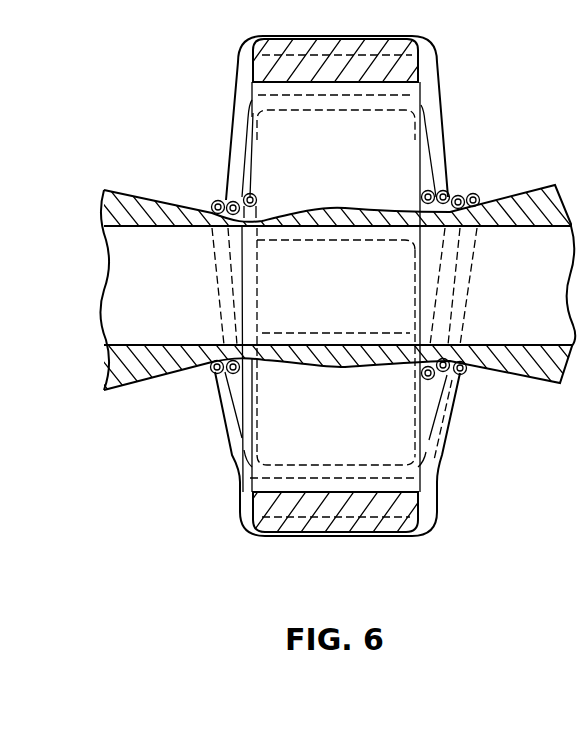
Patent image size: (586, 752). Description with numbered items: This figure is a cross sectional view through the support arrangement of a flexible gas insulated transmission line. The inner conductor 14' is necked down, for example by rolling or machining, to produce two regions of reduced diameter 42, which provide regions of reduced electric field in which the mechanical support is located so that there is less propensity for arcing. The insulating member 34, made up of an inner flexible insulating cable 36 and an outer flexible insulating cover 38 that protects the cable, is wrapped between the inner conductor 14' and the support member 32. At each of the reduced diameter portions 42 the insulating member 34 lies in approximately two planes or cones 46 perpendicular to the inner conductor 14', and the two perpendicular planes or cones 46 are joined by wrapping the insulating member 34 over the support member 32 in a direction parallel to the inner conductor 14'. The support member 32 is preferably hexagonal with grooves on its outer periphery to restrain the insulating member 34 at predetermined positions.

The inner conductor 14' is at (293, 376).
The support member 32 is at (300, 173).
The insulating member 34 is at (438, 70).
The inner flexible insulating cable 36 is at (212, 371).
The outer flexible insulating cover 38 is at (217, 392).
The regions of reduced diameter 42 is at (425, 342).
The planes or cones 46 is at (238, 68).